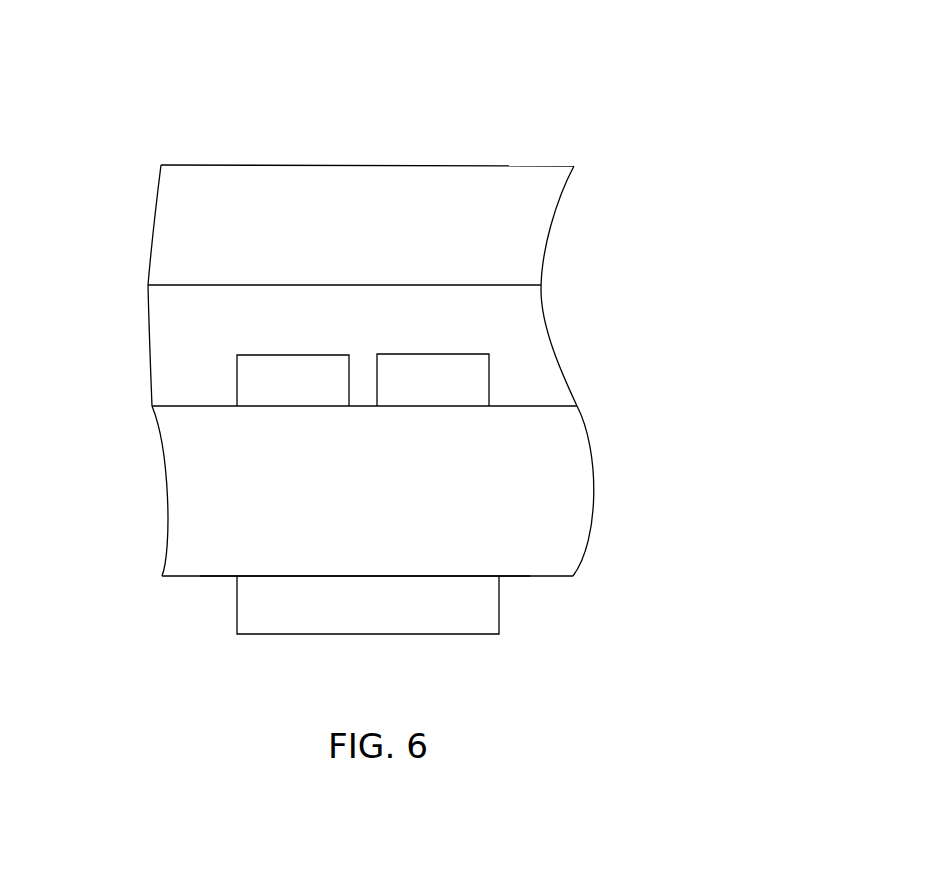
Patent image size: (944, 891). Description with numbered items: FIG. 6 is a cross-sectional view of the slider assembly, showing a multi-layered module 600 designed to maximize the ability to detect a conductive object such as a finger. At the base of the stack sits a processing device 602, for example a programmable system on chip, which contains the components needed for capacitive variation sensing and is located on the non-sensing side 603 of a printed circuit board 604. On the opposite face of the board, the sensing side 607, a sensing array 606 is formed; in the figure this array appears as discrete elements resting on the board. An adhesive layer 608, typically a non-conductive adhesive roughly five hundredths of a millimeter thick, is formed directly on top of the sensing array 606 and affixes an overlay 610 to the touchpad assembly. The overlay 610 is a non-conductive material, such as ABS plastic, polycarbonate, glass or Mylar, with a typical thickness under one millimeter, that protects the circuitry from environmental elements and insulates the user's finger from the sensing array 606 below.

The multi-layered module 600 is at (498, 64).
The processing device 602 is at (388, 618).
The non-sensing side 603 is at (198, 578).
The printed circuit board 604 is at (388, 504).
The sensing array 606 is at (314, 392).
The sensing side 607 is at (197, 405).
The adhesive layer 608 is at (565, 372).
The overlay 610 is at (375, 244).